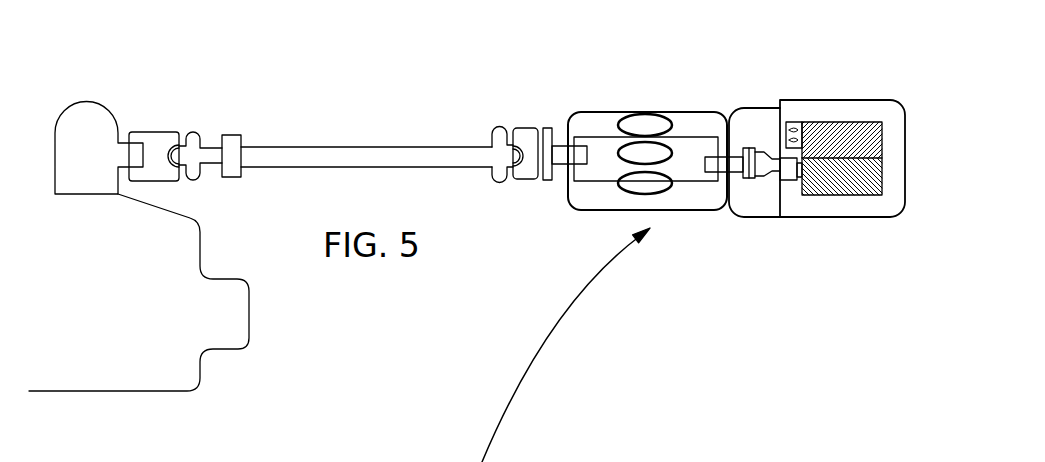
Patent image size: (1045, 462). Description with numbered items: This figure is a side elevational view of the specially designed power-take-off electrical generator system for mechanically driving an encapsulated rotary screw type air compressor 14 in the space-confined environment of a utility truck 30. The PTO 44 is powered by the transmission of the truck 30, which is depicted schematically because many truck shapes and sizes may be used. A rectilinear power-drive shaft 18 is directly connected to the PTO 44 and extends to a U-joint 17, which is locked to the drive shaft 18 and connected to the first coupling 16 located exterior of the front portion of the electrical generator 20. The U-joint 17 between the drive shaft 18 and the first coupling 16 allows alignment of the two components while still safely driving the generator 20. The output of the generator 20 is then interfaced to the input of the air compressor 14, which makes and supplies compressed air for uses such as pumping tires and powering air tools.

The encapsulated rotary screw type air compressor 14 is at (892, 203).
The first coupling 16 is at (547, 128).
The U-joint 17 is at (524, 171).
The rectilinear power-drive shaft 18 is at (451, 150).
The electrical generator 20 is at (574, 114).
The utility truck 30 is at (177, 364).
The power-take-off (PTO) 44 is at (92, 122).